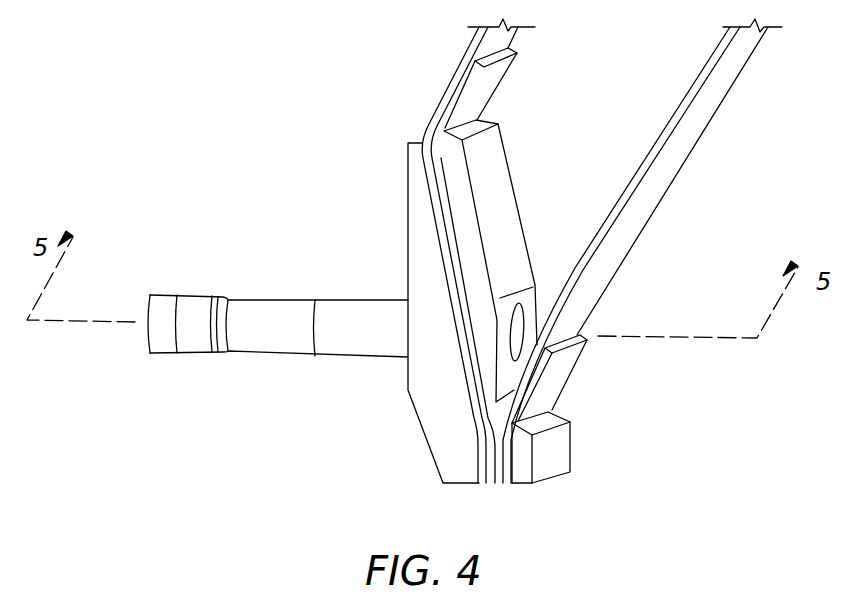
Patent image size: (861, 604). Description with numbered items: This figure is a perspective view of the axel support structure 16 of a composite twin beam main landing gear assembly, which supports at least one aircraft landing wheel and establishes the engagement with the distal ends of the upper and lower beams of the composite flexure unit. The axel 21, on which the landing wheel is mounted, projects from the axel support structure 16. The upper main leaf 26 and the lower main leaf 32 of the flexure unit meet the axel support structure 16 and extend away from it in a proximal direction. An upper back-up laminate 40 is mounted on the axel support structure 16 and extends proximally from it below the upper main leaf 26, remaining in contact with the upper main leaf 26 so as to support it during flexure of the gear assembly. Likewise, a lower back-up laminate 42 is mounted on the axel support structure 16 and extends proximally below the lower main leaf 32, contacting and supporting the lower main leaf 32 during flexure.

The axel support structure 16 is at (418, 209).
The axel 21 is at (258, 342).
The upper main leaf 26 is at (459, 68).
The lower main leaf 32 is at (687, 135).
The upper back-up laminate 40 is at (485, 91).
The lower back-up laminate 42 is at (560, 368).